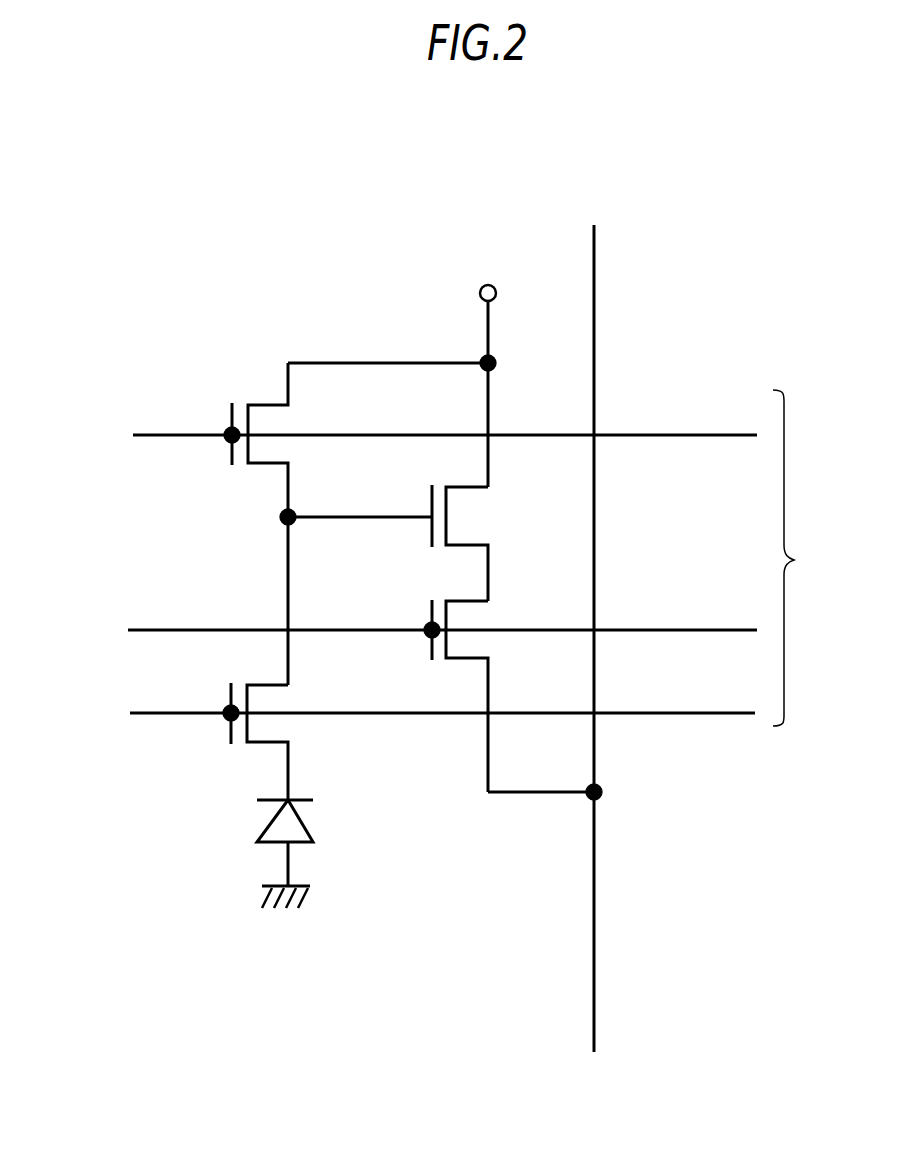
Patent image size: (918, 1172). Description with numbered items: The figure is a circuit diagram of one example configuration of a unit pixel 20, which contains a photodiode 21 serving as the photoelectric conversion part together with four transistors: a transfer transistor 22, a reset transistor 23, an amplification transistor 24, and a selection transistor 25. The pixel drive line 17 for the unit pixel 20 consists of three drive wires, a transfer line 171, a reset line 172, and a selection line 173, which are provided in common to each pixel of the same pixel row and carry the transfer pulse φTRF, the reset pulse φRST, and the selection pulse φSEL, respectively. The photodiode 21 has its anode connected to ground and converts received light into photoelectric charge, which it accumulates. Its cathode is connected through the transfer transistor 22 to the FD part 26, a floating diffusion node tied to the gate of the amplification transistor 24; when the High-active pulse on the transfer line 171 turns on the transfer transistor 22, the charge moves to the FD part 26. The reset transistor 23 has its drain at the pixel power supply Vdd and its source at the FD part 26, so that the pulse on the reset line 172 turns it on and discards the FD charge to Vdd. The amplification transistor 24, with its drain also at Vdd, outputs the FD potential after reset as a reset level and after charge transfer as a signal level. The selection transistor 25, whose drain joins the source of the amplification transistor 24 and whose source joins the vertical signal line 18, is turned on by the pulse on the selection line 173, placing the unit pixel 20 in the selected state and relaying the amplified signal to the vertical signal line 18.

The pixel drive line 17 is at (801, 558).
The transfer line 171 is at (667, 715).
The reset line 172 is at (667, 435).
The selection line 173 is at (667, 630).
The vertical signal line 18 is at (596, 930).
The unit pixel 20 is at (702, 226).
The photodiode 21 is at (300, 824).
The transfer transistor 22 is at (286, 706).
The reset transistor 23 is at (286, 423).
The amplification transistor 24 is at (478, 518).
The selection transistor 25 is at (477, 620).
The FD part 26 is at (281, 517).